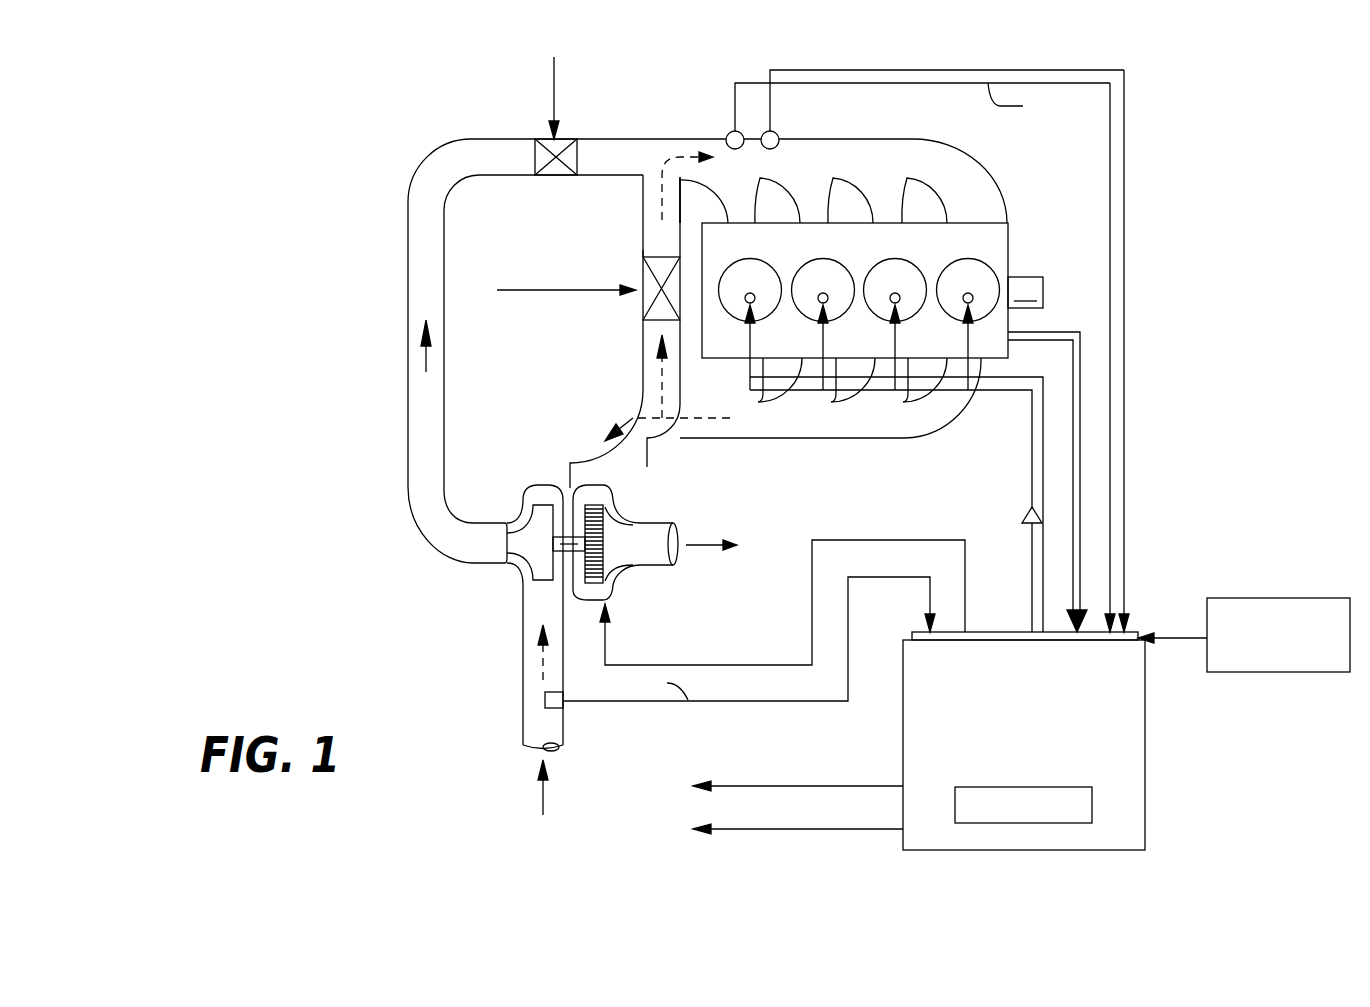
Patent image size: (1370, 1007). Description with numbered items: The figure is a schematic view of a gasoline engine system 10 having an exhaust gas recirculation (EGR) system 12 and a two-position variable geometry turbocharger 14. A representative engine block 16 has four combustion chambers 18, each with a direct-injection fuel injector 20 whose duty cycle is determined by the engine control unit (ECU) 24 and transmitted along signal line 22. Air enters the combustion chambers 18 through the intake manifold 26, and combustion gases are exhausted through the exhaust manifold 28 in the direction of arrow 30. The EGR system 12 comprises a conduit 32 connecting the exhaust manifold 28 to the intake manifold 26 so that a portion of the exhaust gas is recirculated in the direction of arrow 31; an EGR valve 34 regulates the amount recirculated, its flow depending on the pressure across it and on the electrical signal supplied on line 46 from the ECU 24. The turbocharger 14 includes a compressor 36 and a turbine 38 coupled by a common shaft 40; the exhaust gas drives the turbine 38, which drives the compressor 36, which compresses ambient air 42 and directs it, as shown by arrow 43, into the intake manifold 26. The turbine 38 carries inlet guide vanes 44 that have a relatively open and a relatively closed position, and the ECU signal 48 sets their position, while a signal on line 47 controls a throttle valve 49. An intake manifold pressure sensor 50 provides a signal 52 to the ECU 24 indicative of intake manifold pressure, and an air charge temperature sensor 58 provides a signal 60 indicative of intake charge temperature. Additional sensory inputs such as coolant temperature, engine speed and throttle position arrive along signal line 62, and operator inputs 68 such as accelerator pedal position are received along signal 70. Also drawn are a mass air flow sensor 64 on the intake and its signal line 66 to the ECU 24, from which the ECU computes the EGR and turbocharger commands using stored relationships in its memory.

The gasoline engine system 10 is at (1255, 130).
The exhaust gas recirculation (EGR) system 12 is at (628, 306).
The two-position variable geometry turbocharger 14 is at (594, 552).
The engine block 16 is at (1005, 222).
The combustion chambers 18 is at (963, 258).
The direct-injection fuel injector 20 is at (967, 312).
The signal line 22 is at (1031, 487).
The engine control unit (ECU) 24 is at (1146, 730).
The intake manifold 26 is at (950, 155).
The exhaust manifold 28 is at (930, 440).
The exhaust gas flow arrow 30 is at (633, 418).
The EGR flow arrow 31 is at (660, 380).
The conduit 32 is at (643, 192).
The EGR valve 34 is at (642, 263).
The compressor 36 is at (522, 582).
The turbine 38 is at (618, 588).
The common shaft 40 is at (565, 548).
The ambient air 42 is at (541, 797).
The boost flow arrow 43 is at (427, 352).
The inlet guide vanes 44 is at (593, 522).
The EGR valve signal line 46 is at (527, 292).
The throttle signal line 47 is at (553, 84).
The VGT signal 48 is at (725, 665).
The throttle valve 49 is at (553, 177).
The intake manifold pressure (MAP) sensor 50 is at (730, 132).
The MAP signal 52 is at (1110, 470).
The air charge temperature sensor 58 is at (776, 132).
The air charge temperature signal 60 is at (1124, 432).
The additional sensory signal line 62 is at (1081, 515).
The mass air flow sensor 64 is at (552, 710).
The MAF signal line 66 is at (725, 701).
The operator inputs 68 is at (1292, 598).
The operator input signal 70 is at (1172, 636).